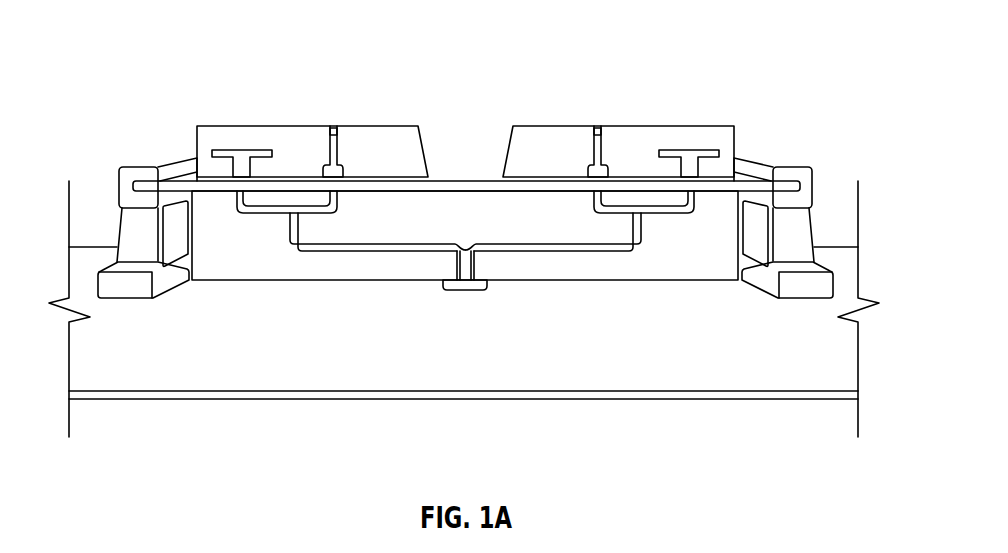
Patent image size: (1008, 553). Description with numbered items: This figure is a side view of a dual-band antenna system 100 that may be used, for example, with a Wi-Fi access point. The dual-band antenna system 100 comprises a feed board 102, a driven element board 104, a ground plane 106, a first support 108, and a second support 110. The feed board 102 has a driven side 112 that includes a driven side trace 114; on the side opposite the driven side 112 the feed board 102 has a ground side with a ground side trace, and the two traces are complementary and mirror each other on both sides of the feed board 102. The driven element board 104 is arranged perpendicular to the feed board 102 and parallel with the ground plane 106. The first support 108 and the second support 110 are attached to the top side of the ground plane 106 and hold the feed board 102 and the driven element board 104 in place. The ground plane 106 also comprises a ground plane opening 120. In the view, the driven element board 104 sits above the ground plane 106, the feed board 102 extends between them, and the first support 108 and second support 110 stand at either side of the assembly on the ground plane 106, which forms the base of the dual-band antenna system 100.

The dual-band antenna system 100 is at (586, 72).
The feed board 102 is at (216, 125).
The driven element board 104 is at (452, 185).
The ground plane 106 is at (755, 380).
The first support 108 is at (130, 298).
The second support 110 is at (797, 300).
The driven side 112 is at (678, 281).
The driven side trace 114 is at (384, 263).
The ground plane opening 120 is at (472, 291).